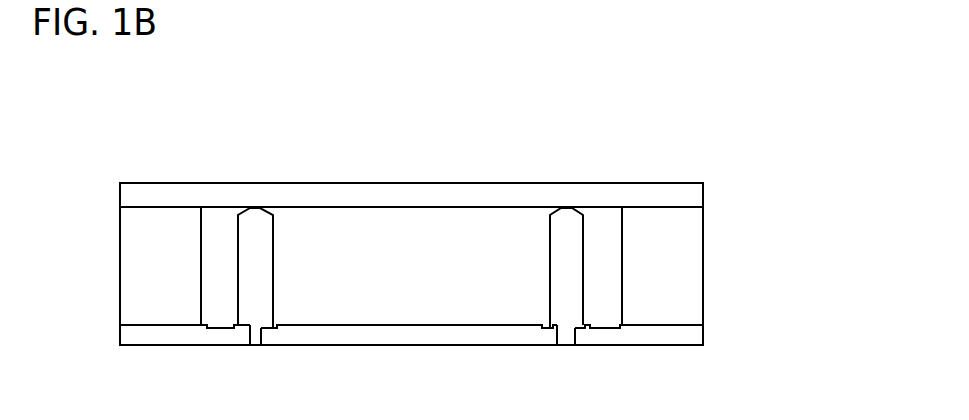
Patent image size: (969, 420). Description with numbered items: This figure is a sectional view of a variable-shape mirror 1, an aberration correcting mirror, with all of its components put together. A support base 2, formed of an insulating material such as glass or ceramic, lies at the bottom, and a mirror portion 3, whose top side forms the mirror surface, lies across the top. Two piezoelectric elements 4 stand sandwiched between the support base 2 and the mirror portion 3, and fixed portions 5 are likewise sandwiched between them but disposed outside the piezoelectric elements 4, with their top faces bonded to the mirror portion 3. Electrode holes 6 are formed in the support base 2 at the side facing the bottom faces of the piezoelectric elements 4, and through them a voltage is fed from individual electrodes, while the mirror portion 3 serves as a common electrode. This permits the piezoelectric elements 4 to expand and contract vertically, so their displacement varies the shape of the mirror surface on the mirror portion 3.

The variable-shape mirror 1 is at (430, 225).
The support base 2 is at (657, 336).
The mirror portion 3 is at (492, 182).
The piezoelectric elements 4 is at (273, 302).
The fixed portions 5 is at (135, 279).
The electrode holes 6 is at (256, 335).